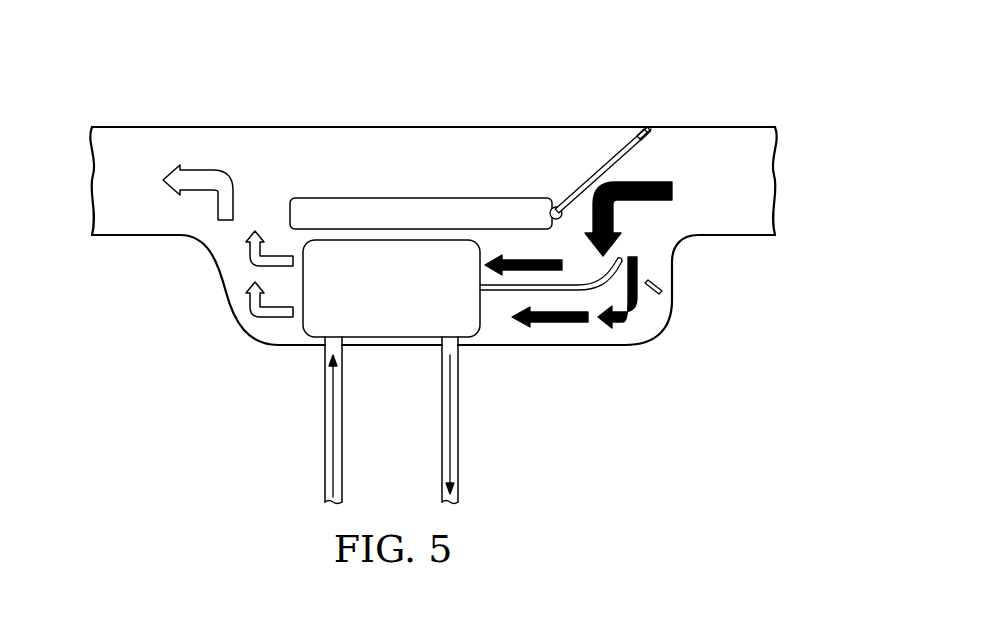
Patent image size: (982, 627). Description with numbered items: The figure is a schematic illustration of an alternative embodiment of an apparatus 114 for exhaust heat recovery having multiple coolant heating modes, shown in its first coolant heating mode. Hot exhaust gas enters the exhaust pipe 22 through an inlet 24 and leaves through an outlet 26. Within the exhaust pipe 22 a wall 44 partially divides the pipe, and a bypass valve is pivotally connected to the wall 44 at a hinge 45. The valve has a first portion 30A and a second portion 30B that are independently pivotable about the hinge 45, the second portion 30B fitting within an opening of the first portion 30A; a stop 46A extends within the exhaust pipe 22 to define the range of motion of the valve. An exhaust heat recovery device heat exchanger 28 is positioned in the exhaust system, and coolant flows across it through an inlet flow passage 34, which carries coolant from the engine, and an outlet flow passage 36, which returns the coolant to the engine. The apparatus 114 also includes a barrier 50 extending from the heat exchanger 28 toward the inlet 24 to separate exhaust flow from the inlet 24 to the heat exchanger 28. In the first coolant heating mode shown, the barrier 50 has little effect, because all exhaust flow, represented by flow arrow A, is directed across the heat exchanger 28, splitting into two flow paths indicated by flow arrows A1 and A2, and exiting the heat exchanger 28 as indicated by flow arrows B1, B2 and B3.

The apparatus 114 is at (490, 81).
The exhaust pipe 22 is at (382, 126).
The inlet 24 is at (740, 128).
The outlet 26 is at (152, 128).
The exhaust heat recovery device heat exchanger 28 is at (391, 288).
The first portion 30A is at (640, 138).
The second portion 30B is at (590, 182).
The inlet flow passage 34 is at (324, 415).
The outlet flow passage 36 is at (459, 477).
The wall 44 is at (421, 213).
The hinge 45 is at (556, 205).
The stop 46A is at (645, 134).
The barrier 50 is at (487, 292).
The flow arrow A is at (675, 192).
The flow arrow A1 is at (523, 258).
The flow arrow A2 is at (640, 267).
The flow arrow B1 is at (250, 247).
The flow arrow B2 is at (280, 320).
The flow arrow B3 is at (237, 198).